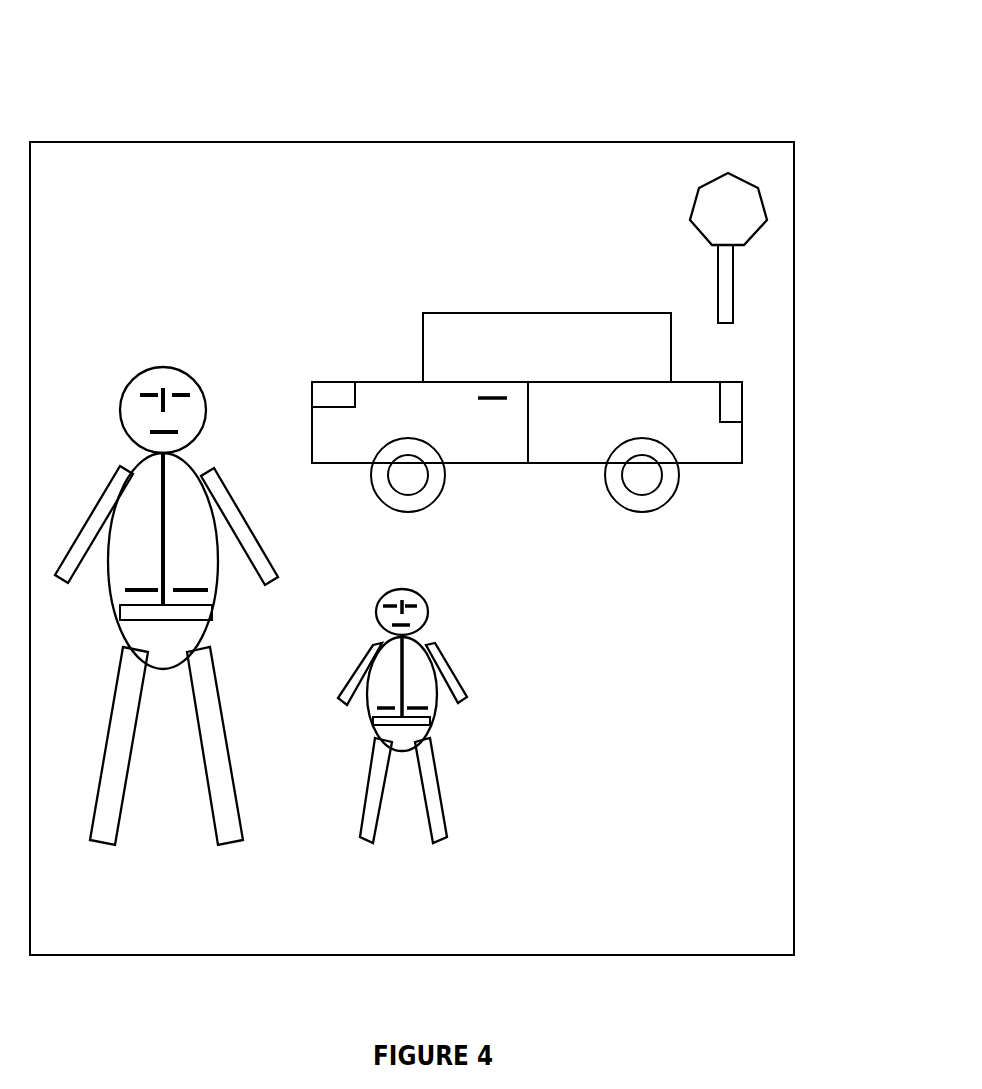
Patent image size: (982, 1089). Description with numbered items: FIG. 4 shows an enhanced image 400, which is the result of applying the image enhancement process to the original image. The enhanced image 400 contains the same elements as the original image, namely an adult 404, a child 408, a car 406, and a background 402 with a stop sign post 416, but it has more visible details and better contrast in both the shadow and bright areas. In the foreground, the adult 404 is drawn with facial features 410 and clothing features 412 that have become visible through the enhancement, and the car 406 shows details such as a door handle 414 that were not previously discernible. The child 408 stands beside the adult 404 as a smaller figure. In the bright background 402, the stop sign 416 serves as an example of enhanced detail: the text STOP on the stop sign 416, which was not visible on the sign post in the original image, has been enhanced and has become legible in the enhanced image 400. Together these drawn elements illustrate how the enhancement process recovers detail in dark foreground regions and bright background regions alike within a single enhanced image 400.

The enhanced image 400 is at (258, 74).
The background 402 is at (727, 688).
The adult 404 is at (157, 549).
The car 406 is at (527, 363).
The child 408 is at (467, 703).
The facial features 410 is at (158, 410).
The clothing features 412 is at (158, 558).
The door handle 414 is at (490, 395).
The stop sign 416 is at (690, 218).